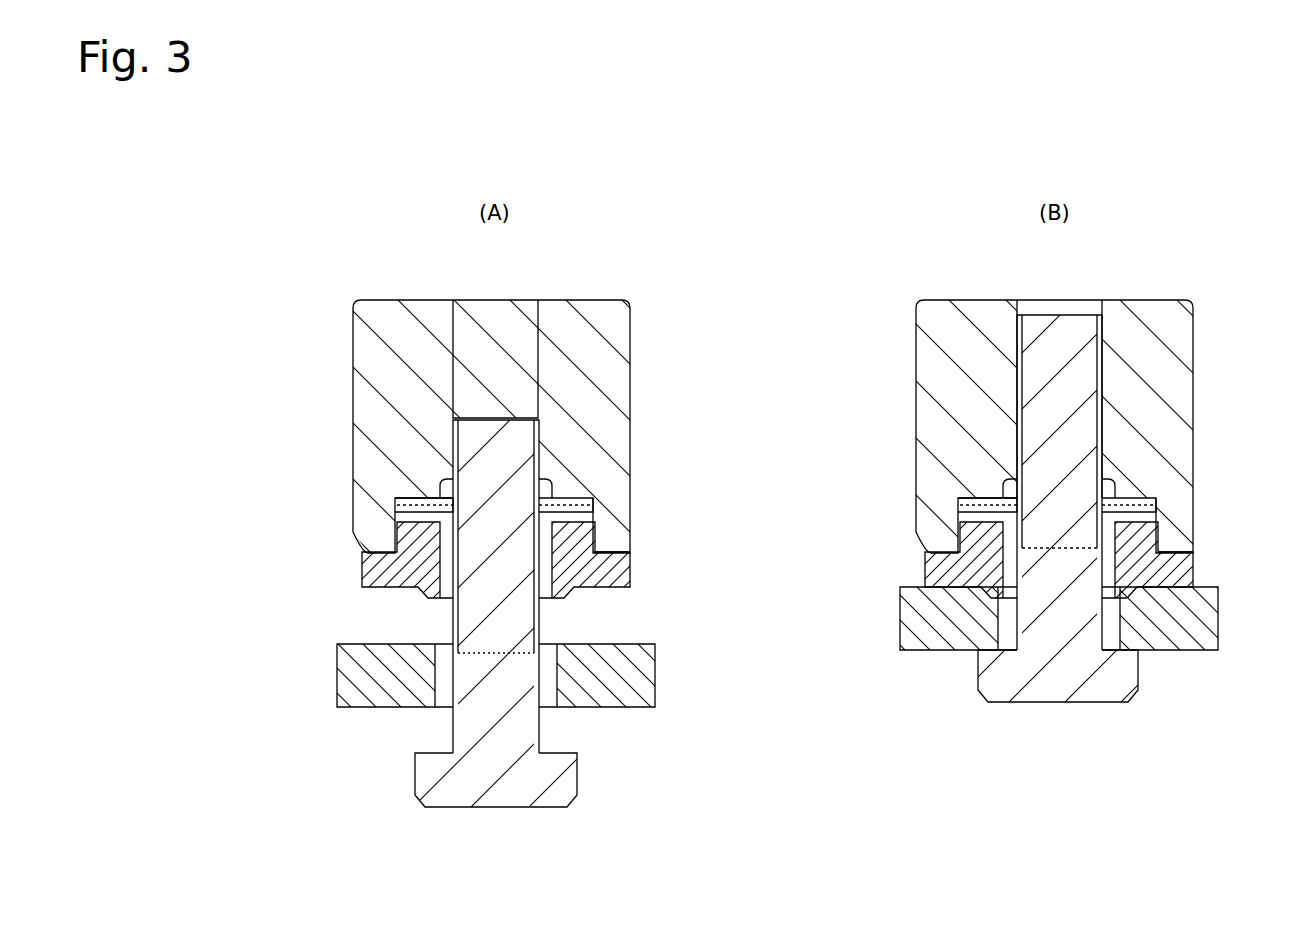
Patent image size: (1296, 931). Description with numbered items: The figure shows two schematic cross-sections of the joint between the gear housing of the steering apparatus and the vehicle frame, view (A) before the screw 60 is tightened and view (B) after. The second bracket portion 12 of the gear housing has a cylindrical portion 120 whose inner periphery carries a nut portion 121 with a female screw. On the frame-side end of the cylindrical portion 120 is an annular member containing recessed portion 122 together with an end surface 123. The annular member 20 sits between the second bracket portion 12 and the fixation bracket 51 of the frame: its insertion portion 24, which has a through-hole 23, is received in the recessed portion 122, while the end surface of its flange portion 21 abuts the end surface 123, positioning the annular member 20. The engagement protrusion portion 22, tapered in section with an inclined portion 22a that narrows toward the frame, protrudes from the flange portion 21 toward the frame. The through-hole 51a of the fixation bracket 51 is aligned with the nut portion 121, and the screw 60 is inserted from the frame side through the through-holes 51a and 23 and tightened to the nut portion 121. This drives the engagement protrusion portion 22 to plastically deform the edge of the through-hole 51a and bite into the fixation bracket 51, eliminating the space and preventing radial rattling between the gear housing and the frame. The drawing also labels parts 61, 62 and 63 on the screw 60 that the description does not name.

The second bracket portion 12 is at (697, 399).
The cylindrical portion 120 is at (387, 317).
The nut portion 121 is at (527, 318).
The annular member containing recessed portion 122 is at (407, 507).
The end surface 123 is at (368, 560).
The annular member 20 is at (778, 559).
The flange portion 21 is at (372, 575).
The engagement protrusion portion 22 is at (440, 600).
The inclined portion 22a is at (571, 600).
The through-hole 23 is at (400, 520).
The insertion portion 24 is at (597, 550).
The fixation bracket 51 is at (779, 645).
The through-hole 51a is at (436, 678).
The screw 60 is at (674, 593).
The bolt head 61 is at (500, 795).
The bolt shank 62 is at (541, 718).
The threaded portion of bolt 63 is at (540, 467).